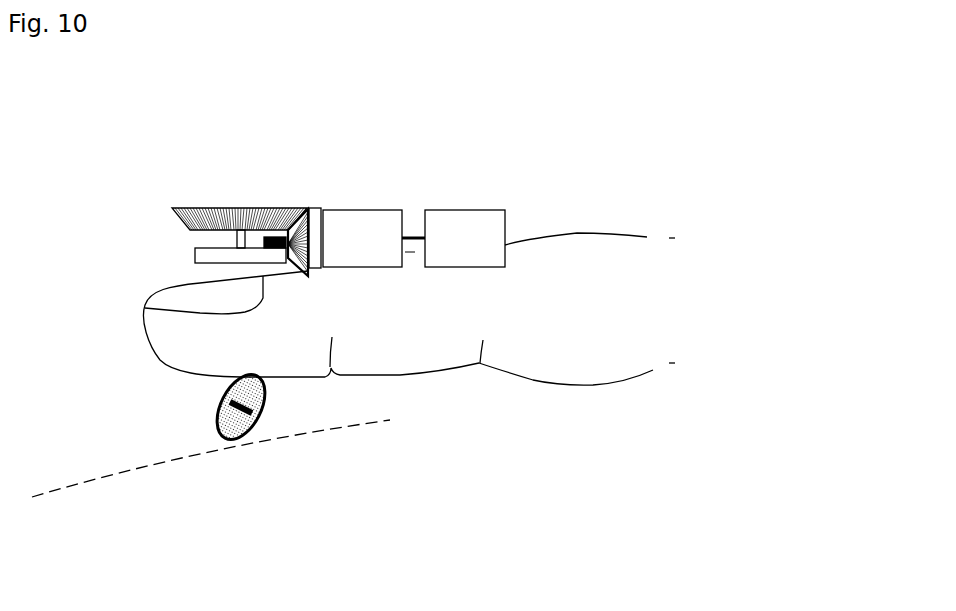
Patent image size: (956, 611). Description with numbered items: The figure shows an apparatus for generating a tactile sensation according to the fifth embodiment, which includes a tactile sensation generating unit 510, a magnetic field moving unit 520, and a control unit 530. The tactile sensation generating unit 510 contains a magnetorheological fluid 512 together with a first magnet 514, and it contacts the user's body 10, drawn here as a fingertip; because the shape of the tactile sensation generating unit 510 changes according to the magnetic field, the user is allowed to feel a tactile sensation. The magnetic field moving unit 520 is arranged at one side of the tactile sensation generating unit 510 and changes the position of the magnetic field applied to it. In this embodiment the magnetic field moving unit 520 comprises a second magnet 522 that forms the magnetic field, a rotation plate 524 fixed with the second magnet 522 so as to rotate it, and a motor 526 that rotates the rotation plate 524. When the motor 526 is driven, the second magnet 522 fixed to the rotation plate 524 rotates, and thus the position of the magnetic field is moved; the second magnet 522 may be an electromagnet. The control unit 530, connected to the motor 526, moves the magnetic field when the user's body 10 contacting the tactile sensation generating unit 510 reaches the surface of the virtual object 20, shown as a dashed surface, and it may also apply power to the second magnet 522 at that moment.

The body 10 is at (585, 252).
The virtual object 20 is at (145, 455).
The tactile sensation generating unit 510 is at (297, 546).
The magnetorheological fluid 512 is at (223, 443).
The first magnet 514 is at (268, 398).
The magnetic field moving unit 520 is at (363, 143).
The second magnet 522 is at (253, 240).
The rotation plate 524 is at (207, 253).
The motor 526 is at (360, 215).
The control unit 530 is at (463, 215).